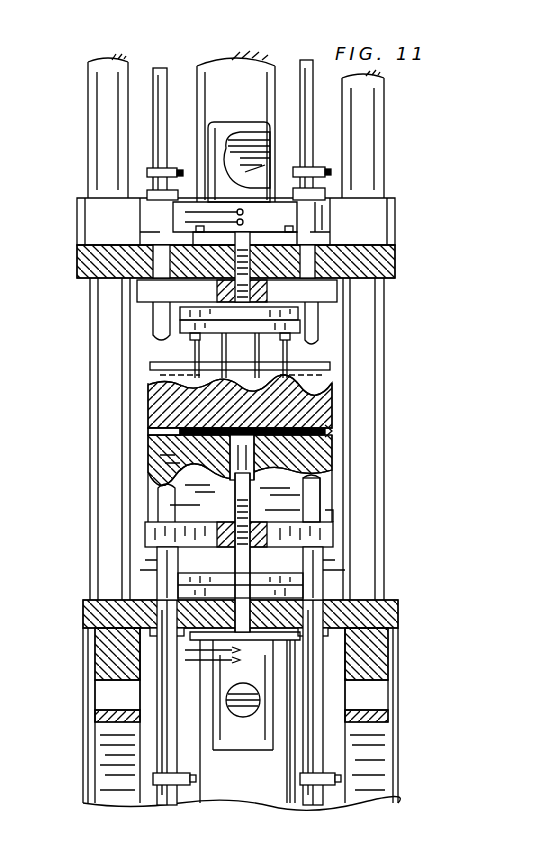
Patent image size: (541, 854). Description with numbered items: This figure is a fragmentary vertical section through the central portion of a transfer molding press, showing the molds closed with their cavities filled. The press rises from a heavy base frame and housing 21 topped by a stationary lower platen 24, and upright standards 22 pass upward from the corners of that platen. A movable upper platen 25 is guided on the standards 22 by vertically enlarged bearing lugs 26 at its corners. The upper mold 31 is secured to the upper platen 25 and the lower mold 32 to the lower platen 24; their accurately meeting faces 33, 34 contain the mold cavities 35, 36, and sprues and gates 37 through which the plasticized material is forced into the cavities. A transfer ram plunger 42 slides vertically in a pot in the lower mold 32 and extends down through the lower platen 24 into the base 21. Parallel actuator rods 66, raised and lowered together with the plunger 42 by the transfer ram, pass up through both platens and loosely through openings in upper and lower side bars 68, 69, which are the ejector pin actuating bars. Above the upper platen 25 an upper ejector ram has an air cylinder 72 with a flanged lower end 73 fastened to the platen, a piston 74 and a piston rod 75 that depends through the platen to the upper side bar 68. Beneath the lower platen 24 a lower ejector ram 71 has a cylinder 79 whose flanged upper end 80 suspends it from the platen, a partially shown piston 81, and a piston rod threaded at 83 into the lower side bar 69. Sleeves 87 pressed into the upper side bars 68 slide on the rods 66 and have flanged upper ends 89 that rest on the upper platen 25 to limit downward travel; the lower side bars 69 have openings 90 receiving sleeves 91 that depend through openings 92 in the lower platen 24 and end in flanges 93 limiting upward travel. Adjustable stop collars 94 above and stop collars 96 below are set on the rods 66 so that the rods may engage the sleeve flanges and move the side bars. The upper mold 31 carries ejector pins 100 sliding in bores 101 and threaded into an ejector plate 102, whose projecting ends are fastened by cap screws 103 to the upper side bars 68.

The base frame and housing 21 is at (100, 773).
The standards 22 is at (88, 94).
The lower platen 24 is at (95, 612).
The upper platen 25 is at (98, 262).
The bearing lugs 26 is at (77, 208).
The upper mold 31 is at (335, 391).
The lower mold 32 is at (335, 479).
The meeting face of upper mold 33 is at (330, 428).
The meeting face of lower mold 34 is at (332, 448).
The mold cavity 35 is at (178, 424).
The mold cavity 36 is at (175, 440).
The sprues and gates 37 is at (176, 488).
The transfer ram plunger 42 is at (256, 472).
The actuator rods 66 is at (160, 68).
The upper side bars 68 is at (140, 295).
The lower side bars 69 is at (335, 535).
The lower ejector rams 71 is at (207, 128).
The air cylinder 72 is at (236, 128).
The flanged lower end 73 is at (298, 233).
The piston 74 is at (250, 147).
The piston rod 75 is at (245, 172).
The cylinder 79 is at (288, 738).
The flanged upper end 80 is at (290, 643).
The piston 81 is at (243, 708).
The threaded connection 83 is at (243, 524).
The sleeves 87 is at (157, 222).
The flanged upper ends 89 is at (338, 193).
The openings 90 is at (340, 518).
The sleeves 91 is at (323, 568).
The openings 92 is at (332, 613).
The flanges 93 is at (152, 634).
The stop collars 94 is at (147, 172).
The stop collars 96 is at (338, 776).
The ejector pins 100 is at (300, 348).
The bores 101 is at (150, 402).
The ejector plate 102 is at (157, 327).
The cap screws 103 is at (155, 363).